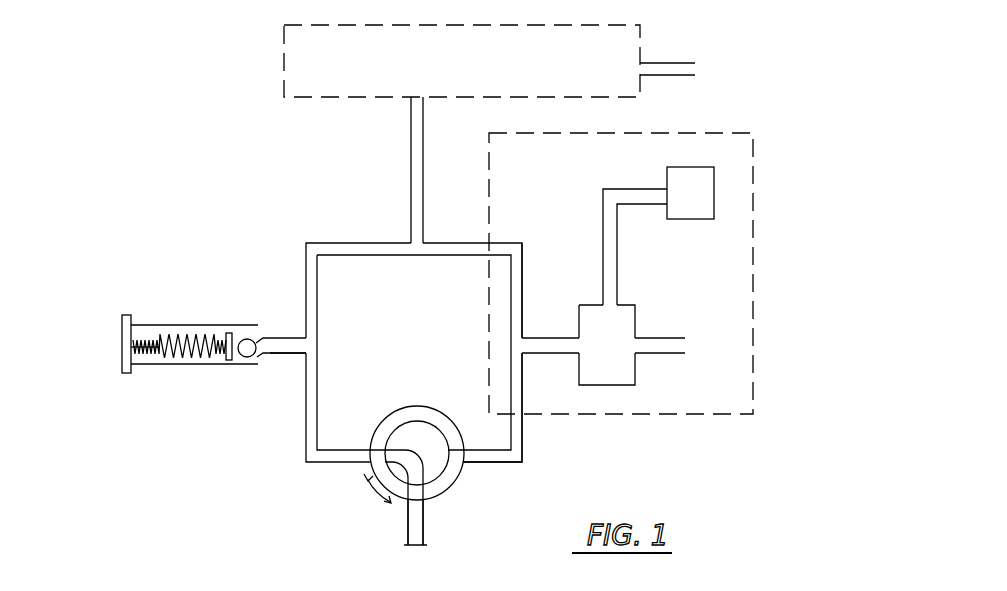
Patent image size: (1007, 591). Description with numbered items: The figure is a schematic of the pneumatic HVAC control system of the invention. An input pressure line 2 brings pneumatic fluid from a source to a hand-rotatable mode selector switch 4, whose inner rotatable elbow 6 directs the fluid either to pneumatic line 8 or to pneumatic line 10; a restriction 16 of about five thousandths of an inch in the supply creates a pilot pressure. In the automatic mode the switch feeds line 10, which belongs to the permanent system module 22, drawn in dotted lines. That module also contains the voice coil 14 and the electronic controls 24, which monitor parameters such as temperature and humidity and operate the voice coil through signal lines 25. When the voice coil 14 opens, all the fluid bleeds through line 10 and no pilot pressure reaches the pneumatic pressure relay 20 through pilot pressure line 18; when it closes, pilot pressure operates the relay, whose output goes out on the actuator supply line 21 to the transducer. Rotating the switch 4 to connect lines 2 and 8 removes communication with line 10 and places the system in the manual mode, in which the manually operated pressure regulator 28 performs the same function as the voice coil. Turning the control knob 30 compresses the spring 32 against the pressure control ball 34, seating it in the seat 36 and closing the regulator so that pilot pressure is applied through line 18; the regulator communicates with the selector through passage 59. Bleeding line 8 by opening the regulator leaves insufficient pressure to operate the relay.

The input pressure line 2 is at (408, 527).
The mode selector switch 4 is at (368, 470).
The inner rotatable elbow 6 is at (413, 455).
The pneumatic line 8 is at (320, 393).
The pneumatic line 10 is at (522, 453).
The voice coil 14 is at (622, 305).
The restriction 16 is at (522, 263).
The pilot pressure line 18 is at (411, 144).
The pneumatic pressure relay 20 is at (284, 60).
The actuator supply line 21 is at (677, 62).
The permanent system module 22 is at (705, 414).
The electronic controls 24 is at (677, 167).
The signal lines 25 is at (598, 194).
The manually operated pressure regulator 28 is at (165, 305).
The control knob 30 is at (122, 320).
The spring 32 is at (172, 362).
The pressure control ball 34 is at (245, 360).
The seat 36 is at (262, 337).
The passage 59 is at (290, 354).